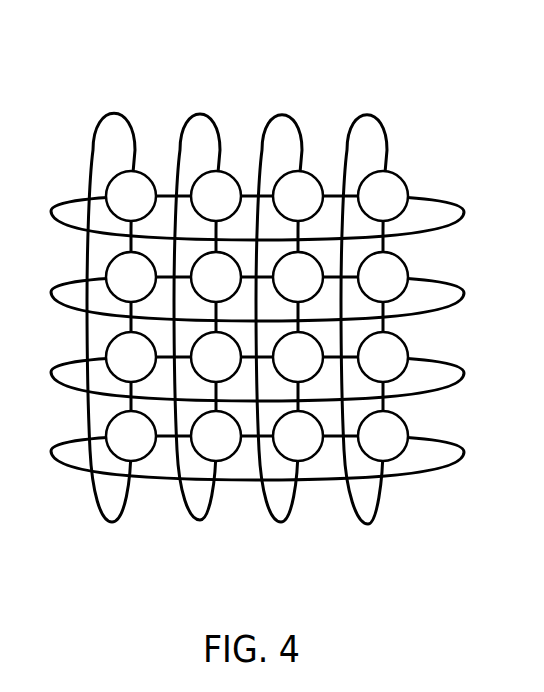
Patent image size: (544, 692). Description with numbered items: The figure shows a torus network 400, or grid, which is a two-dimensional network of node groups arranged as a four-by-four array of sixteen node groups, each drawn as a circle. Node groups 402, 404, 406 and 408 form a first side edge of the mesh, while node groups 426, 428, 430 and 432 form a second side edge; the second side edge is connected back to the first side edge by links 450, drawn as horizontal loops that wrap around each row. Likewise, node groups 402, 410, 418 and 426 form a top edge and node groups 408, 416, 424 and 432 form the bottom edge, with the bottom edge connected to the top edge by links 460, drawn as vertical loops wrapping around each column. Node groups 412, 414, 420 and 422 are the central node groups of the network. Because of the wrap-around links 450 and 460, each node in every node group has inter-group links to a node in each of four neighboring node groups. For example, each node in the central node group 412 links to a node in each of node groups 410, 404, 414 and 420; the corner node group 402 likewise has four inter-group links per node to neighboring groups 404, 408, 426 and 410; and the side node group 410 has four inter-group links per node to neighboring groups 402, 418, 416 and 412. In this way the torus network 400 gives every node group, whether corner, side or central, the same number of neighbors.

The torus network 400 is at (420, 77).
The node group 402 is at (107, 190).
The node group 404 is at (107, 272).
The node group 406 is at (107, 351).
The node group 408 is at (107, 431).
The node group 410 is at (222, 171).
The node group 412 is at (232, 253).
The node group 414 is at (238, 377).
The node group 416 is at (226, 463).
The node group 418 is at (308, 171).
The node group 420 is at (315, 257).
The node group 422 is at (322, 377).
The node group 424 is at (304, 466).
The node group 426 is at (407, 183).
The node group 428 is at (407, 273).
The node group 430 is at (407, 353).
The node group 432 is at (410, 430).
The links 450 is at (465, 212).
The links 460 is at (112, 522).